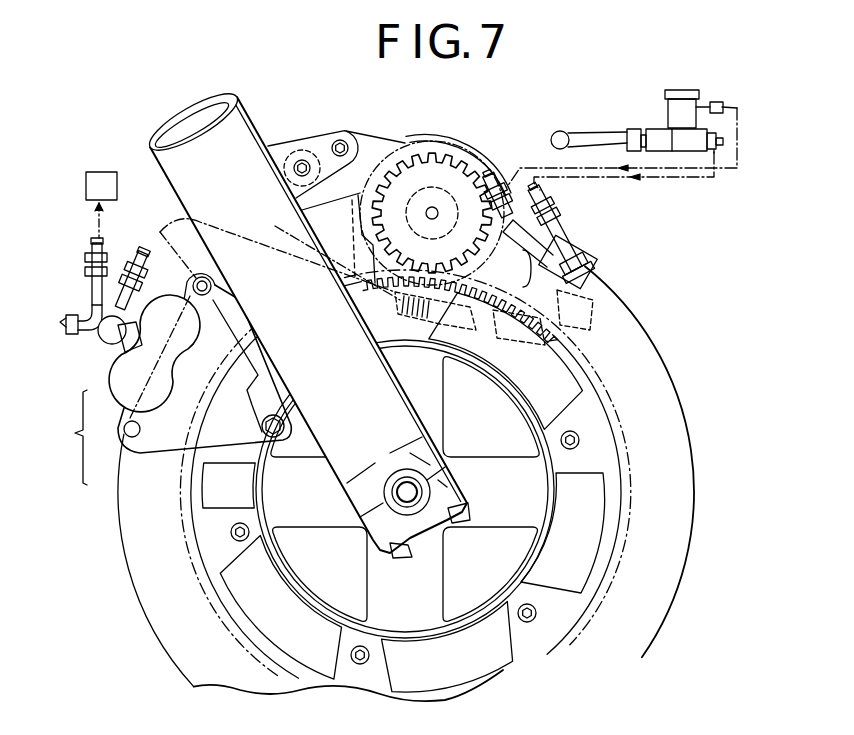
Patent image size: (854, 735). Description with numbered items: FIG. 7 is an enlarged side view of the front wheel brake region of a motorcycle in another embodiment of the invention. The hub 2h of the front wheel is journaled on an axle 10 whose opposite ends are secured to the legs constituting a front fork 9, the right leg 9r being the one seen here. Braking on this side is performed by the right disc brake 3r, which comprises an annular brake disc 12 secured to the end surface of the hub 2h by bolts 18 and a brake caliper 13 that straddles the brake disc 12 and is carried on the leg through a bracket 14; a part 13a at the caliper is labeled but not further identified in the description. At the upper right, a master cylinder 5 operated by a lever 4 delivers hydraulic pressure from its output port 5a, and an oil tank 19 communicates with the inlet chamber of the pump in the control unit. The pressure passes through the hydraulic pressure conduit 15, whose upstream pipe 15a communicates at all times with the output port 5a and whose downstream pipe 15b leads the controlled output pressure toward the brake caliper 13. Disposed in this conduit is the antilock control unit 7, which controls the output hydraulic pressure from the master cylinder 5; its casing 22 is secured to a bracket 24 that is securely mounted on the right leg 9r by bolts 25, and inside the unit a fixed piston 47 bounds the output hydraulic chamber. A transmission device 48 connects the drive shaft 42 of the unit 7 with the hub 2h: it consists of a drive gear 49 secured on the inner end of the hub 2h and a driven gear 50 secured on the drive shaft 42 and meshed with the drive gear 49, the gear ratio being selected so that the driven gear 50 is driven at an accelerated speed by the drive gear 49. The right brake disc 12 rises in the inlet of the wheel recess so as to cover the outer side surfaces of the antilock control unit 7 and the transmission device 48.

The hub 2h is at (553, 505).
The right disc brake 3r is at (82, 328).
The lever 4 is at (602, 133).
The master cylinder 5 is at (655, 130).
The output port 5a is at (698, 140).
The antilock control unit 7 is at (479, 150).
The front fork 9 is at (257, 112).
The right leg 9r is at (205, 120).
The axle 10 is at (398, 493).
The brake disc 12 is at (123, 472).
The brake caliper 13 is at (120, 392).
The caliper hose connector 13a is at (122, 343).
The bracket 14 is at (264, 356).
The hydraulic pressure conduit 15 is at (657, 182).
The upstream pipe 15a is at (614, 170).
The downstream pipe 15b is at (221, 235).
The bolts 18 is at (231, 533).
The oil tank 19 is at (683, 90).
The casing 22 is at (505, 230).
The bracket 24 is at (376, 150).
The bolts 25 is at (301, 158).
The drive shaft 42 is at (437, 214).
The fixed piston 47 is at (735, 170).
The transmission device 48 is at (556, 262).
The drive gear 49 is at (511, 272).
The driven gear 50 is at (480, 243).